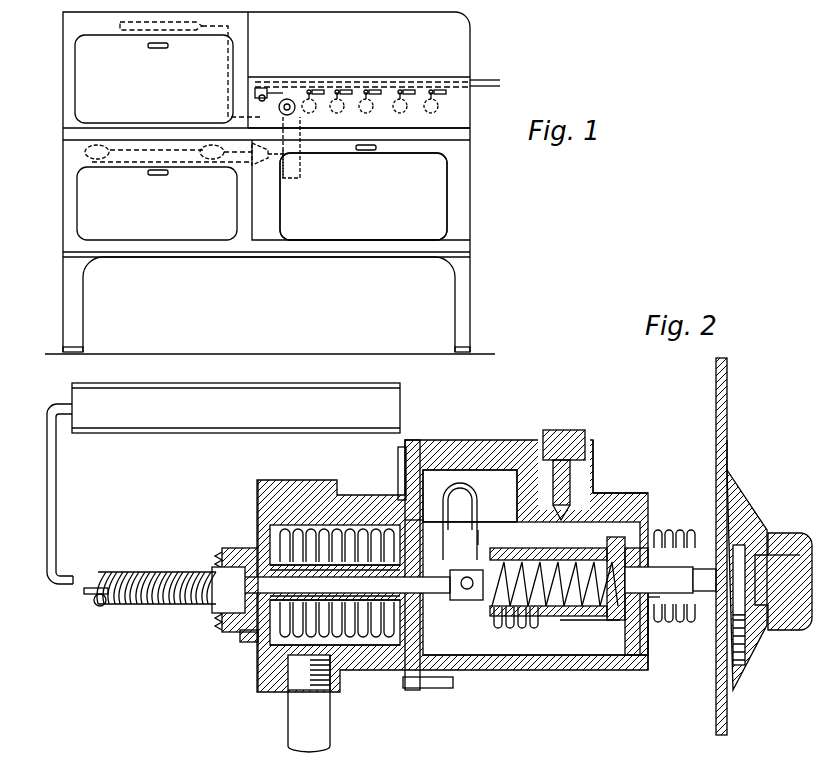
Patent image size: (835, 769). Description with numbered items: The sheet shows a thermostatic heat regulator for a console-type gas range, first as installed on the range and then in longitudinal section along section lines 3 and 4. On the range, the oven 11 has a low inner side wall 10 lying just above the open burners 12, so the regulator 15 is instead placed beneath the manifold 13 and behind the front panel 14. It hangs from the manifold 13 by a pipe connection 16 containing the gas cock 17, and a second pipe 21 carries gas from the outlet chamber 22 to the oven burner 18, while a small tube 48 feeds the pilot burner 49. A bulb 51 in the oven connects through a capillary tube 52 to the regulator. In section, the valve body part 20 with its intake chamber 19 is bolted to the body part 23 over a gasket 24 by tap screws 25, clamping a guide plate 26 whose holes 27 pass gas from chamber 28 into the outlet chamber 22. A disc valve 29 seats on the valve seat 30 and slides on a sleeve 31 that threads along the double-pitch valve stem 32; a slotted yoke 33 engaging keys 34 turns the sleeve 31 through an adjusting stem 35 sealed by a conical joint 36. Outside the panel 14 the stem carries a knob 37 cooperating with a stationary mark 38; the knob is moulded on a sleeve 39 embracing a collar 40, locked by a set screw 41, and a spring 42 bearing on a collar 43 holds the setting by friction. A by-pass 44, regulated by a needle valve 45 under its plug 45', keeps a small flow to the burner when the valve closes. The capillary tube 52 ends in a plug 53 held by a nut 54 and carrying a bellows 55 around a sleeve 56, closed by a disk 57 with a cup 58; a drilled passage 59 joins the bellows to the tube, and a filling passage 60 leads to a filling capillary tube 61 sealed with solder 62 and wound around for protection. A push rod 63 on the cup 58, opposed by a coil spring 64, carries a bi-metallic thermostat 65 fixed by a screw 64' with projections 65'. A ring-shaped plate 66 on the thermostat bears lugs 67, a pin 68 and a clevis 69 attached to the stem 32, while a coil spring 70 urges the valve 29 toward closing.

In FIG. 1, the inner side wall 10 is at (250, 30).
In FIG. 1, the oven 11 is at (80, 70).
In FIG. 1, the open burners 12 is at (356, 76).
In FIG. 1, the manifold 13 is at (412, 82).
In FIG. 1, the front panel 14 is at (436, 115).
In FIG. 2, the front panel 14 is at (727, 398).
In FIG. 2, the regulator 15 is at (600, 496).
In FIG. 1, the pipe connection 16 is at (292, 105).
In FIG. 1, the gas cock 17 is at (268, 90).
In FIG. 1, the oven burner 18 is at (150, 146).
In FIG. 2, the intake chamber 19 is at (622, 494).
In FIG. 2, the valve body part 20 is at (650, 504).
In FIG. 1, the second pipe 21 is at (266, 178).
In FIG. 2, the second pipe 21 is at (292, 730).
In FIG. 2, the outlet chamber 22 is at (308, 528).
In FIG. 2, the body part 23 is at (293, 500).
In FIG. 2, the gasket 24 is at (412, 444).
In FIG. 2, the tap screws 25 is at (400, 450).
In FIG. 2, the guide plate 26 is at (402, 672).
In FIG. 2, the holes 27 is at (420, 522).
In FIG. 2, the chamber 28 is at (476, 474).
In FIG. 2, the disc valve 29 is at (530, 618).
In FIG. 2, the valve seat 30 is at (566, 612).
In FIG. 2, the sleeve 31 is at (628, 672).
In FIG. 2, the valve stem 32 is at (592, 622).
In FIG. 2, the slotted yoke 33 is at (654, 640).
In FIG. 2, the keys 34 is at (649, 672).
In FIG. 2, the adjusting stem 35 is at (668, 572).
In FIG. 2, the conical joint 36 is at (652, 566).
In FIG. 1, the knob 37 is at (296, 110).
In FIG. 2, the knob 37 is at (750, 535).
In FIG. 2, the stationary mark 38 is at (727, 468).
In FIG. 2, the sleeve 39 is at (768, 545).
In FIG. 2, the collar 40 is at (766, 606).
In FIG. 2, the set screw 41 is at (746, 640).
In FIG. 2, the spring 42 is at (668, 624).
In FIG. 2, the collar 43 is at (740, 520).
In FIG. 2, the by-pass 44 is at (542, 458).
In FIG. 2, the needle valve 45 is at (630, 413).
In FIG. 2, the plug 45' is at (551, 420).
In FIG. 1, the small tube 48 is at (363, 196).
In FIG. 1, the pilot burner 49 is at (188, 160).
In FIG. 1, the bulb 51 is at (137, 32).
In FIG. 2, the bulb 51 is at (160, 432).
In FIG. 1, the capillary tube 52 is at (228, 50).
In FIG. 2, the capillary tube 52 is at (49, 457).
In FIG. 2, the plug 53 is at (226, 562).
In FIG. 2, the nut 54 is at (256, 522).
In FIG. 2, the bellows 55 is at (348, 536).
In FIG. 2, the sleeve 56 is at (330, 536).
In FIG. 2, the disk 57 is at (357, 690).
In FIG. 2, the cup 58 is at (345, 690).
In FIG. 2, the drilled passage 59 is at (266, 482).
In FIG. 2, the filling passage 60 is at (252, 640).
In FIG. 2, the filling capillary tube 61 is at (218, 610).
In FIG. 2, the solder 62 is at (100, 608).
In FIG. 2, the push rod 63 is at (262, 660).
In FIG. 2, the coil spring 64 is at (318, 684).
In FIG. 2, the screw 64' is at (459, 608).
In FIG. 2, the bi-metallic thermostat 65 is at (478, 502).
In FIG. 2, the integral projections 65' is at (460, 540).
In FIG. 2, the ring-shaped plate 66 is at (480, 530).
In FIG. 2, the lugs 67 is at (470, 570).
In FIG. 2, the pin 68 is at (480, 608).
In FIG. 2, the clevis 69 is at (500, 626).
In FIG. 2, the coil spring 70 is at (515, 620).
In FIG. 2, the section line 3- 3 is at (575, 385).
In FIG. 2, the section line 4- 4 is at (455, 385).